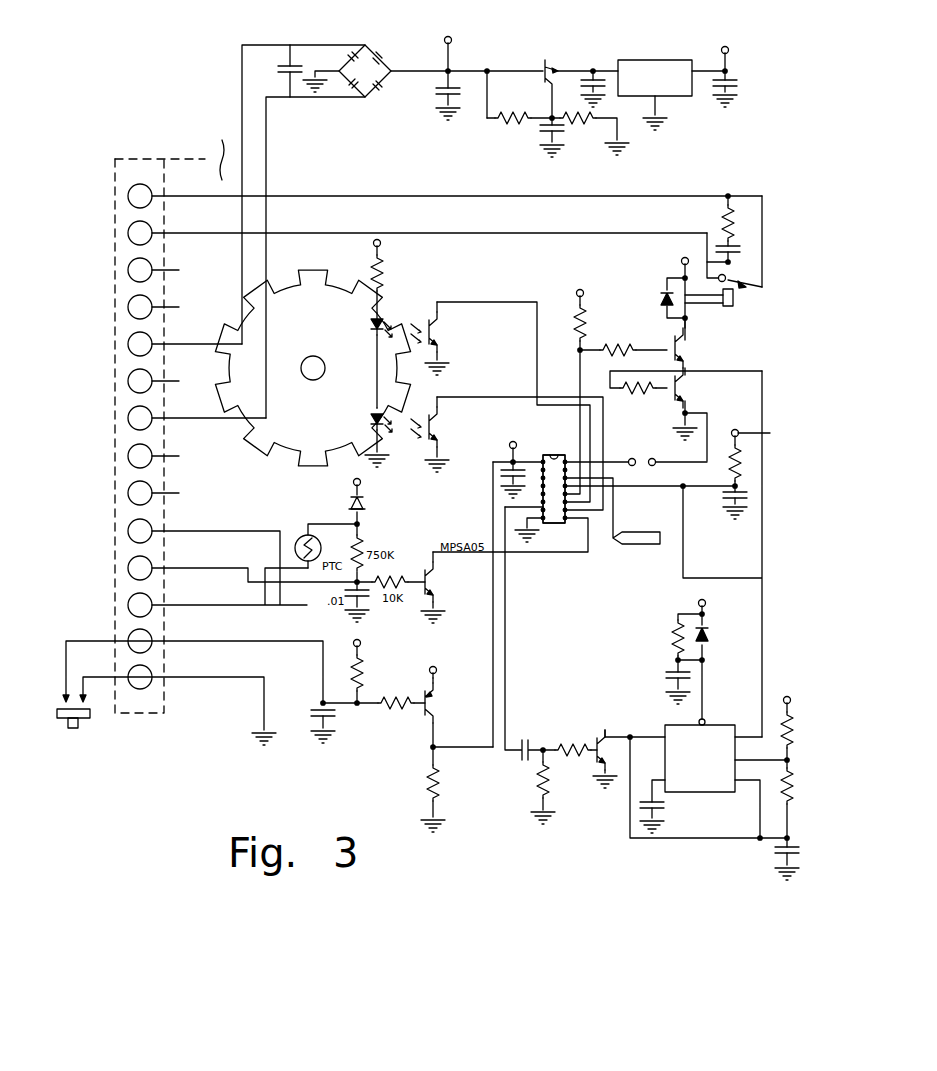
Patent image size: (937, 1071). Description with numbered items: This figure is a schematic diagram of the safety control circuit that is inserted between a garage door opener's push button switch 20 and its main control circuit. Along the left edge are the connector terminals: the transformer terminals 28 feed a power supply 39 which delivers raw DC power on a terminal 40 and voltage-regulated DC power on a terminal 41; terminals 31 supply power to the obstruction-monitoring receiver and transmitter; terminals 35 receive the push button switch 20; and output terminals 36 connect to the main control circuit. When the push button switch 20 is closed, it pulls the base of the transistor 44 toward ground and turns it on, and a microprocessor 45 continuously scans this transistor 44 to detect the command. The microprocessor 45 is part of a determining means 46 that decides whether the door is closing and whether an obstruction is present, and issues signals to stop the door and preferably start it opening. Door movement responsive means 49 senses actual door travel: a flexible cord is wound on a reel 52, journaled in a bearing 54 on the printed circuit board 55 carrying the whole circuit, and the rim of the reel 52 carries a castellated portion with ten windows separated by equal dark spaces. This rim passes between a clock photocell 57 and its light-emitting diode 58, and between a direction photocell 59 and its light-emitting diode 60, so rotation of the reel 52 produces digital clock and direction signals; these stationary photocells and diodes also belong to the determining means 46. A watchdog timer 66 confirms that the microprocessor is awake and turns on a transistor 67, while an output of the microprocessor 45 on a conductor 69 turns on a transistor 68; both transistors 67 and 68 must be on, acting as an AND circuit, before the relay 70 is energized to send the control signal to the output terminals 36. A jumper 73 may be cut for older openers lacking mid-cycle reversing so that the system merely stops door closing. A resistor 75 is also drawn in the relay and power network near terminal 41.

The push button switch 20 is at (94, 724).
The transformer terminals 28 is at (130, 420).
The terminals 31 is at (128, 603).
The terminals 35 is at (130, 675).
The output terminals 36 is at (128, 234).
The power supply 39 is at (568, 26).
The terminal 40 is at (452, 38).
The terminal 41 is at (729, 52).
The transistor 44 is at (425, 722).
The microprocessor 45 is at (553, 523).
The determining means 46 is at (560, 518).
The door movement responsive means 49 is at (507, 375).
The reel 52 is at (310, 467).
The bearing 54 is at (318, 357).
The printed circuit board 55 is at (197, 161).
The clock photocell 57 is at (440, 326).
The light-emitting diode 58 is at (372, 323).
The direction photocell 59 is at (440, 421).
The light-emitting diode 60 is at (372, 417).
The timer 66 is at (727, 782).
The transistor 67 is at (700, 403).
The transistor 68 is at (688, 344).
The conductor 69 is at (578, 380).
The relay 70 is at (746, 308).
The jumper 73 is at (650, 458).
The resistor 75 is at (734, 240).